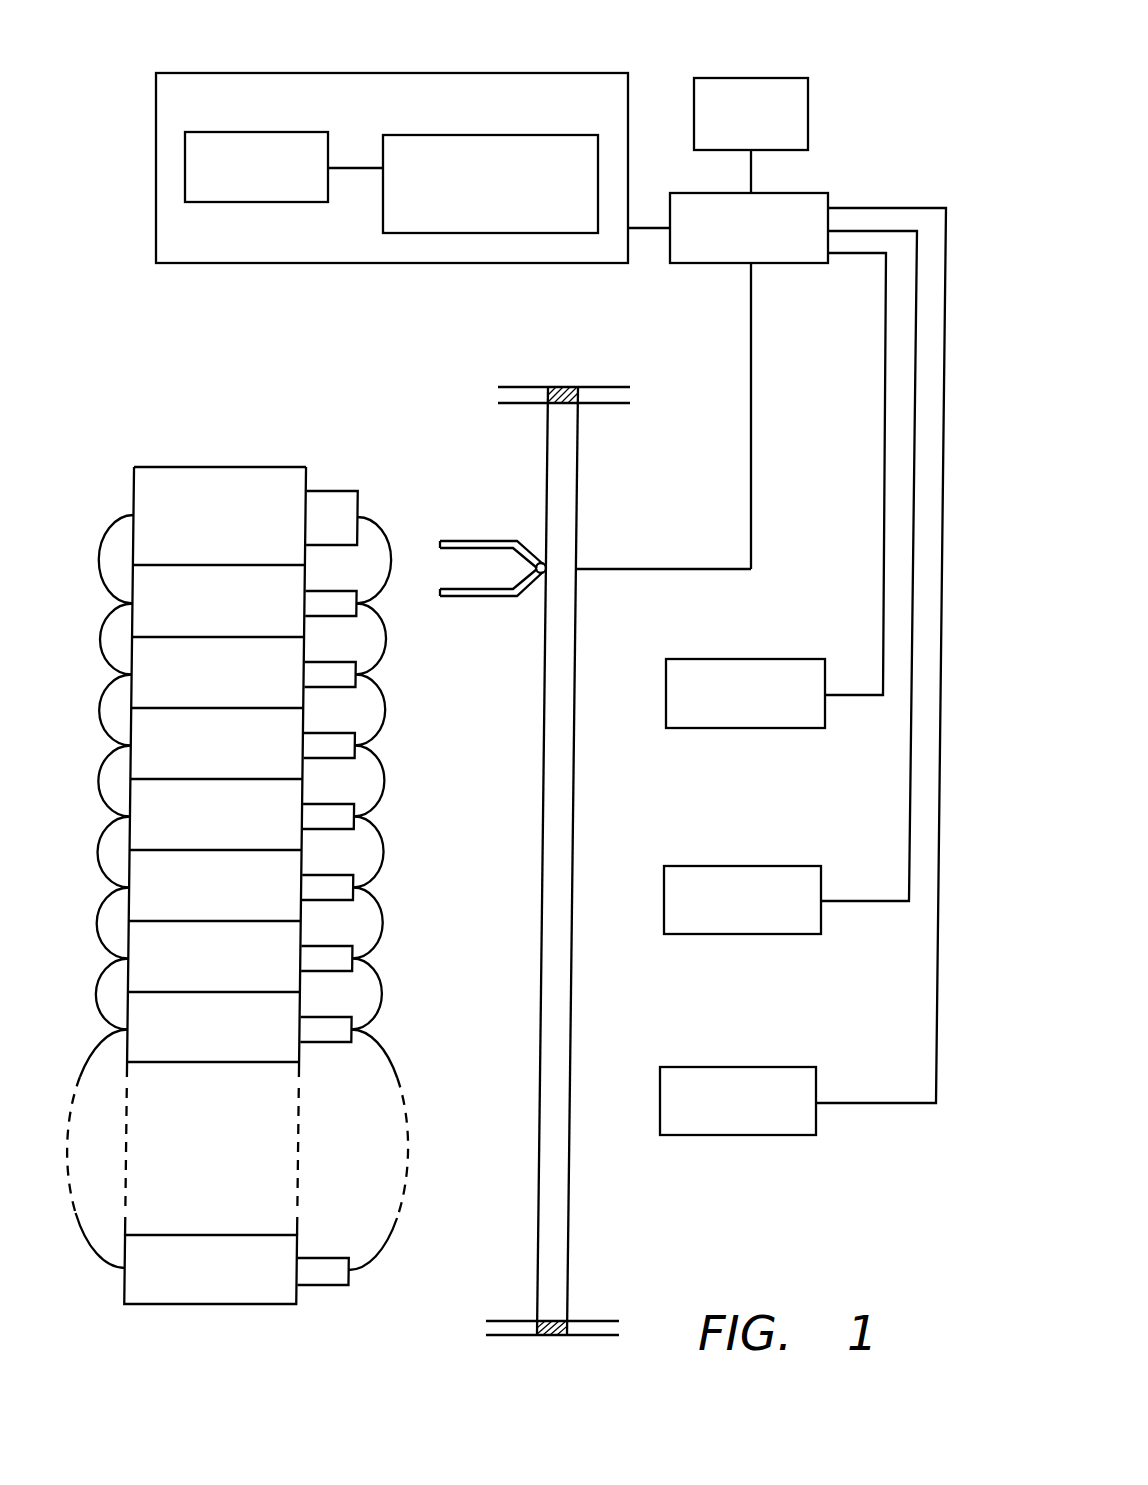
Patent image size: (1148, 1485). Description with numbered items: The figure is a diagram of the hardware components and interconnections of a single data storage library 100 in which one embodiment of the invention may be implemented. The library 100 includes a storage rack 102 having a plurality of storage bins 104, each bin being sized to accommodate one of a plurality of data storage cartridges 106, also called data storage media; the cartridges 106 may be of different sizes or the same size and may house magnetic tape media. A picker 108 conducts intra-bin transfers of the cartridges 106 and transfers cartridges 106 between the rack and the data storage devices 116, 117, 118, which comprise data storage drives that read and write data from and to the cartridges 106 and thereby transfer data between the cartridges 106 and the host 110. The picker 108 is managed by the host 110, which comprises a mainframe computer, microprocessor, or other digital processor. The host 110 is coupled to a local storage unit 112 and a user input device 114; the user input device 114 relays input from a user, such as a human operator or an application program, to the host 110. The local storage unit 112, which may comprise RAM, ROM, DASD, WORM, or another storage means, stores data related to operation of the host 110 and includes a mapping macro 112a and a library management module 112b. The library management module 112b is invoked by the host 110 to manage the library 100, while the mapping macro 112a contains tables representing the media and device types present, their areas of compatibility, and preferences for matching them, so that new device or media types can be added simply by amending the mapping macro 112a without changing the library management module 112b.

The data storage library 100 is at (177, 36).
The storage rack 102 is at (237, 433).
The storage bins 104 is at (134, 517).
The data storage cartridges 106 is at (358, 517).
The picker 108 is at (525, 358).
The host 110 is at (773, 264).
The local storage unit 112 is at (535, 74).
The mapping macro 112a is at (216, 132).
The library management module 112b is at (487, 135).
The user input device 114 is at (720, 78).
The data storage device 116 is at (725, 659).
The data storage device 117 is at (724, 866).
The data storage device 118 is at (722, 1067).